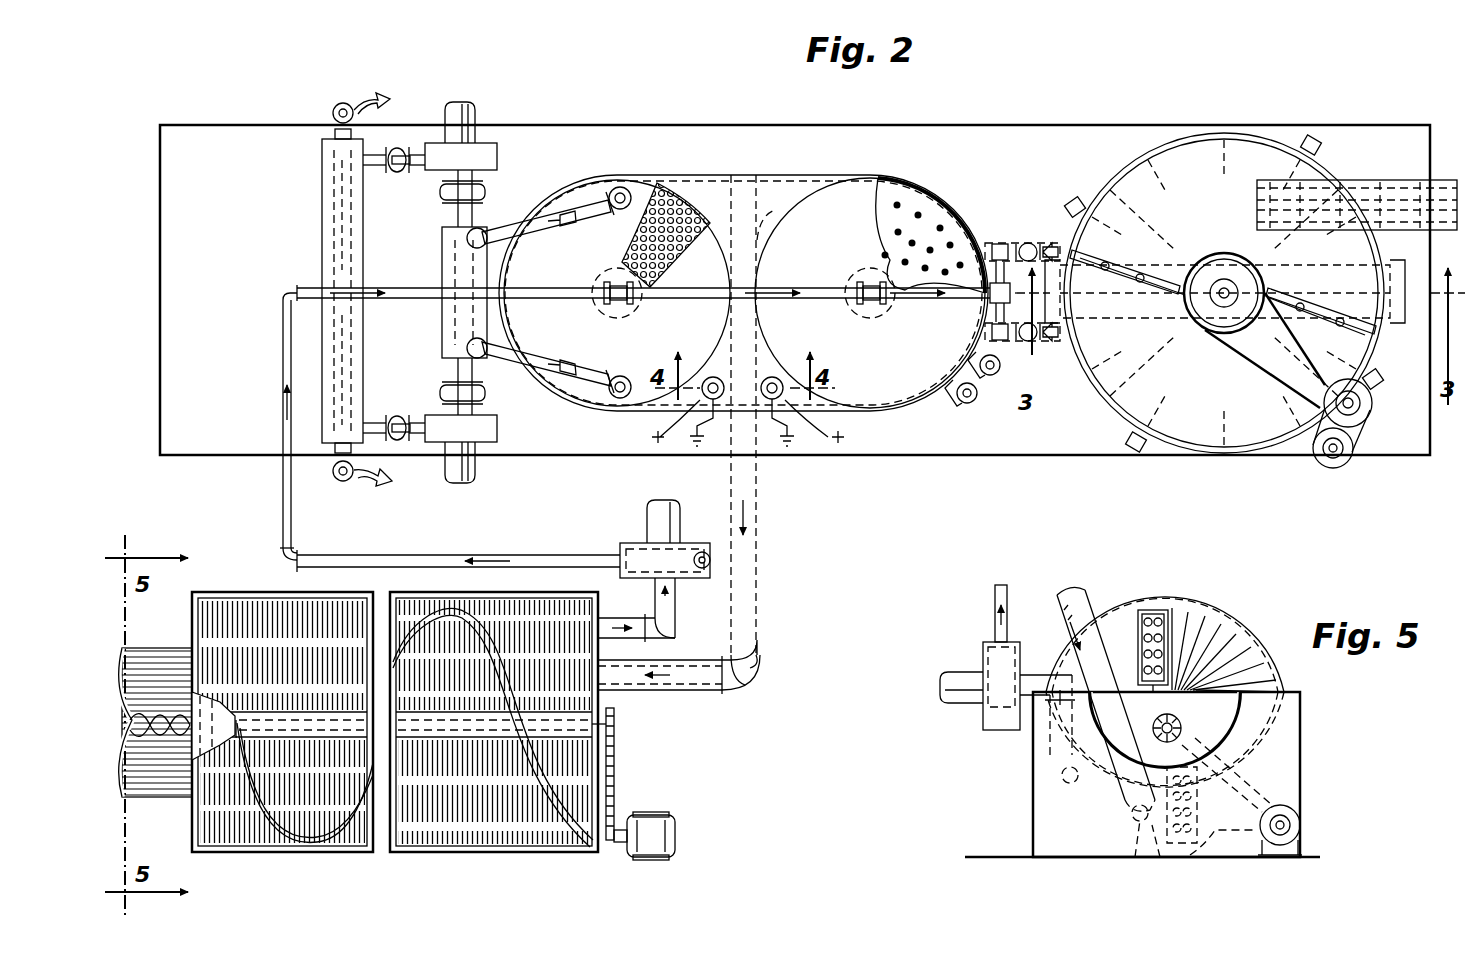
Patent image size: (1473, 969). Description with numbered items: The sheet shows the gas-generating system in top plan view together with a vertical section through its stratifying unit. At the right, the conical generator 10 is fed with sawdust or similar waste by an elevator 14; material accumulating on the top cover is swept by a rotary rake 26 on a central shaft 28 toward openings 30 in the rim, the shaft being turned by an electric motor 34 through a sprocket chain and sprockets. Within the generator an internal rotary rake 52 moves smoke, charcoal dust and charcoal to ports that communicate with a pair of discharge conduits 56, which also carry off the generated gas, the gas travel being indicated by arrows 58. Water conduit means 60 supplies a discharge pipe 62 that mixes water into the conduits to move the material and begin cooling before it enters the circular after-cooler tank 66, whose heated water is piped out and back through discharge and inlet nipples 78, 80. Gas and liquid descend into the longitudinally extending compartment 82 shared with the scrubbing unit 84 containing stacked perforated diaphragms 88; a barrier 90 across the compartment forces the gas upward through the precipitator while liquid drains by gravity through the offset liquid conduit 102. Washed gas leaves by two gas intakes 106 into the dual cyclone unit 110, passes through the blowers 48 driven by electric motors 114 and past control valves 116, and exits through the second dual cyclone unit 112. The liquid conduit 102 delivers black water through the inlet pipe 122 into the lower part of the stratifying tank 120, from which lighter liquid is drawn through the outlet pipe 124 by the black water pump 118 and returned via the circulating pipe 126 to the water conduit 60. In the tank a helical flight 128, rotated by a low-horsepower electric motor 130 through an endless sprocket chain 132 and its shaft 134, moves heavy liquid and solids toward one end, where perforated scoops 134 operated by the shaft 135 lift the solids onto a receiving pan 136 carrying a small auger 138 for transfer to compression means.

In FIG. 2, the generator 10 is at (1105, 428).
In FIG. 2, the elevator 14 is at (1365, 182).
In FIG. 2, the rotary rake 26 is at (1150, 243).
In FIG. 2, the central shaft 28 is at (1230, 280).
In FIG. 2, the openings 30 is at (1050, 262).
In FIG. 2, the electric motor 34 is at (1333, 468).
In FIG. 2, the blowers 48 is at (497, 156).
In FIG. 2, the internal rotary rake 52 is at (1135, 320).
In FIG. 2, the discharge conduits 56 is at (1028, 243).
In FIG. 2, the arrows 58 is at (338, 100).
In FIG. 2, the water conduit means 60 is at (534, 292).
In FIG. 2, the discharge pipe 62 is at (1020, 244).
In FIG. 2, the after-cooler tank 66 is at (866, 176).
In FIG. 2, the discharge nipple 78 is at (1025, 370).
In FIG. 2, the inlet nipple 80 is at (980, 410).
In FIG. 2, the longitudinally extending compartment 82 is at (735, 175).
In FIG. 2, the scrubbing unit 84 is at (575, 178).
In FIG. 2, the perforated diaphragms 88 is at (690, 190).
In FIG. 2, the barrier 90 is at (772, 213).
In FIG. 2, the liquid conduit 102 is at (731, 352).
In FIG. 5, the liquid conduit 102 is at (1088, 605).
In FIG. 2, the gas intakes 106 is at (621, 187).
In FIG. 2, the dual cyclone unit 110 is at (442, 268).
In FIG. 2, the dual cyclone unit 112 is at (322, 212).
In FIG. 2, the electric motors 114 is at (476, 104).
In FIG. 2, the control valves 116 is at (395, 172).
In FIG. 2, the black water pump 118 is at (630, 543).
In FIG. 5, the black water pump 118 is at (983, 655).
In FIG. 2, the stratifying tank 120 is at (510, 852).
In FIG. 5, the stratifying tank 120 is at (1300, 760).
In FIG. 2, the inlet pipe 122 is at (660, 692).
In FIG. 5, the inlet pipe 122 is at (1145, 858).
In FIG. 2, the outlet pipe 124 is at (645, 616).
In FIG. 5, the outlet pipe 124 is at (1060, 750).
In FIG. 2, the circulating pipe 126 is at (430, 553).
In FIG. 2, the helical flight 128 is at (560, 800).
In FIG. 5, the helical flight 128 is at (1280, 648).
In FIG. 2, the electric motor 130 is at (676, 830).
In FIG. 5, the electric motor 130 is at (1300, 822).
In FIG. 2, the endless sprocket chain 132 is at (615, 775).
In FIG. 5, the perforated scoops 134 is at (1158, 608).
In FIG. 2, the shaft 135 is at (458, 715).
In FIG. 2, the receiving pan 136 is at (135, 648).
In FIG. 5, the receiving pan 136 is at (1232, 715).
In FIG. 2, the auger 138 is at (140, 735).
In FIG. 5, the auger 138 is at (1176, 718).